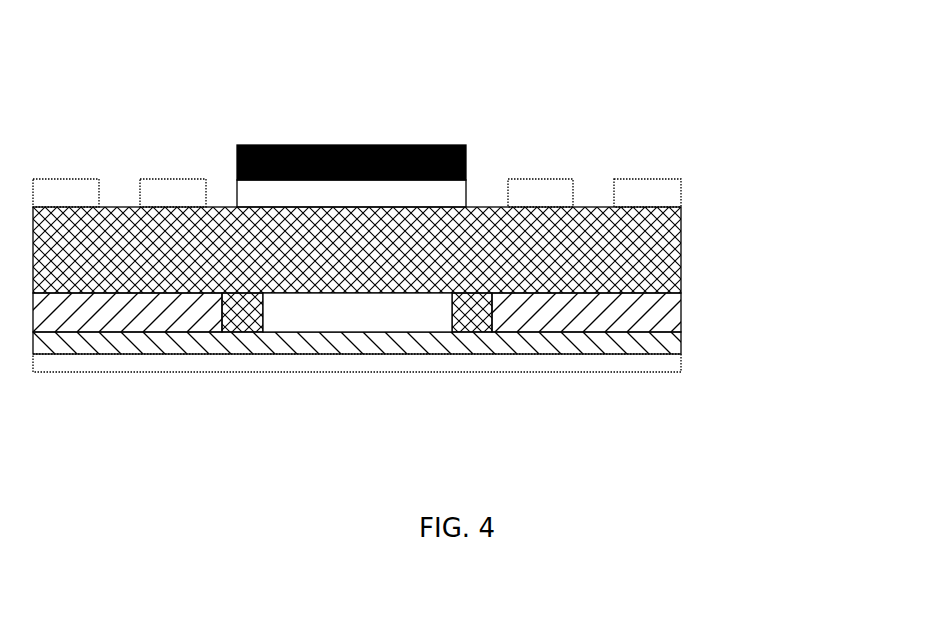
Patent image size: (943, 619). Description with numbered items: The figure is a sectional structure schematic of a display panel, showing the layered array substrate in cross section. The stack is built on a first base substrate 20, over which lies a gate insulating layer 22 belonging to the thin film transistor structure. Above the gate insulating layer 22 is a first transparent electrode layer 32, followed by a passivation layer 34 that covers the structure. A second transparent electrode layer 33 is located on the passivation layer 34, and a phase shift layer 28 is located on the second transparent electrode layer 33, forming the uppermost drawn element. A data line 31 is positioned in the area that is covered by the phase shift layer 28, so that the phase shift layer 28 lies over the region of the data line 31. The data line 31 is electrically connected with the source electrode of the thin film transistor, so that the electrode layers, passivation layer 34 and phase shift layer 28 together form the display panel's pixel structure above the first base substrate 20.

The first base substrate 20 is at (663, 368).
The gate insulating layer 22 is at (681, 340).
The phase shift layer 28 is at (381, 145).
The data line 31 is at (358, 311).
The first transparent electrode layer 32 is at (681, 298).
The second transparent electrode layer 33 is at (663, 186).
The passivation layer 34 is at (680, 227).